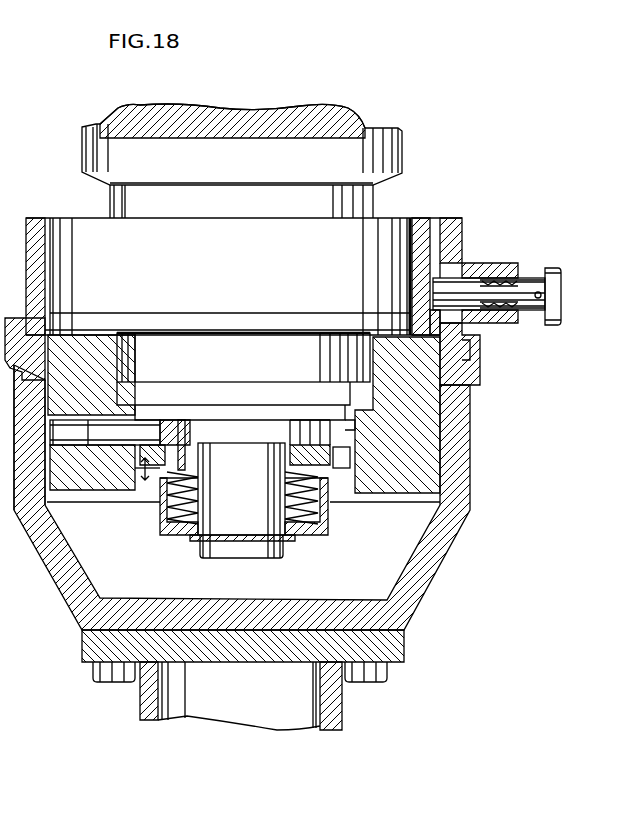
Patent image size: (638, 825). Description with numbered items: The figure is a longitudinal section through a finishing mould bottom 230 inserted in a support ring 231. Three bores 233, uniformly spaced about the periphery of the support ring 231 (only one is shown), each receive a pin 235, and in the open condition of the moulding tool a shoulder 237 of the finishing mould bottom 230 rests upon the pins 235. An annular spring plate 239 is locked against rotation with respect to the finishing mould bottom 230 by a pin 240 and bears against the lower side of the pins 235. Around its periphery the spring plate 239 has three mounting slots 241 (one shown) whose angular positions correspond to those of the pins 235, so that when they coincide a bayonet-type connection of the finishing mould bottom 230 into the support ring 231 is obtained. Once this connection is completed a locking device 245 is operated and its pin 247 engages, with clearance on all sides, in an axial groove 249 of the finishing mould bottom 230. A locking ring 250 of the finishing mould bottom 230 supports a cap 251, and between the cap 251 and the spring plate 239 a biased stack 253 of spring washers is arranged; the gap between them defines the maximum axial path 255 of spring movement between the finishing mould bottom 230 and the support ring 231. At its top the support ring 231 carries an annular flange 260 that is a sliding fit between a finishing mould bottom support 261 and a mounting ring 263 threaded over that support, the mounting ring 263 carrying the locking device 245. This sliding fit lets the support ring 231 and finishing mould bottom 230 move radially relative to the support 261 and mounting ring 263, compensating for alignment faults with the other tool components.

The finishing mould bottom 230 is at (393, 127).
The support ring 231 is at (430, 445).
The bore 233 is at (66, 438).
The pin 235 is at (142, 425).
The shoulder 237 is at (345, 427).
The annular spring plate 239 is at (313, 455).
The pin 240 is at (193, 440).
The mounting slot 241 is at (345, 458).
The locking device 245 is at (552, 269).
The pin 247 is at (440, 292).
The axial groove 249 is at (430, 232).
The locking ring 250 is at (292, 547).
The cap 251 is at (325, 533).
The stack of spring washers 253 is at (322, 510).
The maximum axial path of spring movement 255 is at (142, 490).
The annular flange 260 is at (460, 342).
The finishing mould bottom support 261 is at (452, 580).
The mounting ring 263 is at (462, 262).